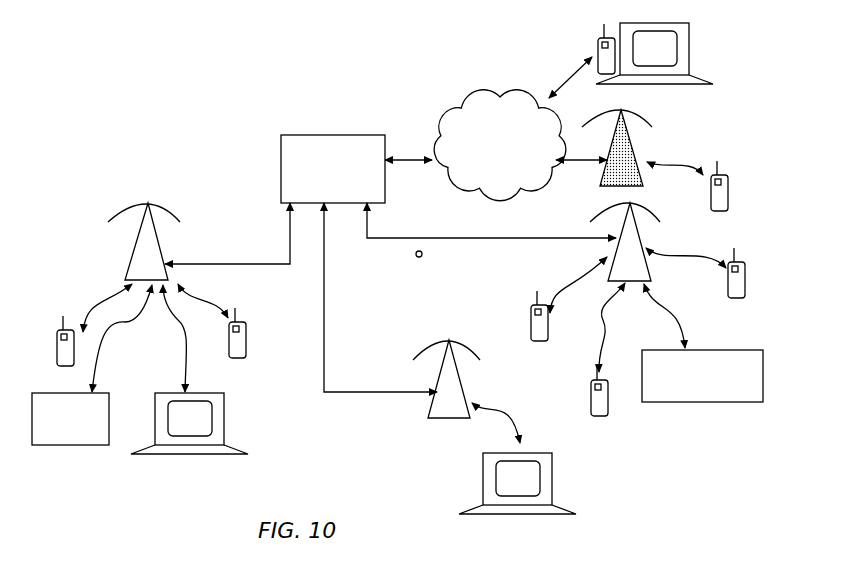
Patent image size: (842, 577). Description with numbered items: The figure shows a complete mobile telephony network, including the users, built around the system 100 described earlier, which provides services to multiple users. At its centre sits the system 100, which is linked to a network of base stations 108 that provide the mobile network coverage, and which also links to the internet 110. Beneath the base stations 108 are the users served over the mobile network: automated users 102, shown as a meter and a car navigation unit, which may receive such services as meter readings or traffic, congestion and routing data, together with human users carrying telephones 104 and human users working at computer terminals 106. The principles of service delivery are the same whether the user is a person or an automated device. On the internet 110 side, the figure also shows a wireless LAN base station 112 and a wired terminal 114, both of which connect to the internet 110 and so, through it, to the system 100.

The system 100 is at (320, 161).
The automated users 102 is at (63, 445).
The telephones 104 is at (247, 342).
The computer terminals 106 is at (548, 489).
The base stations 108 is at (163, 247).
The internet 110 is at (510, 153).
The wireless LAN base station 112 is at (603, 187).
The wired terminal 114 is at (640, 84).